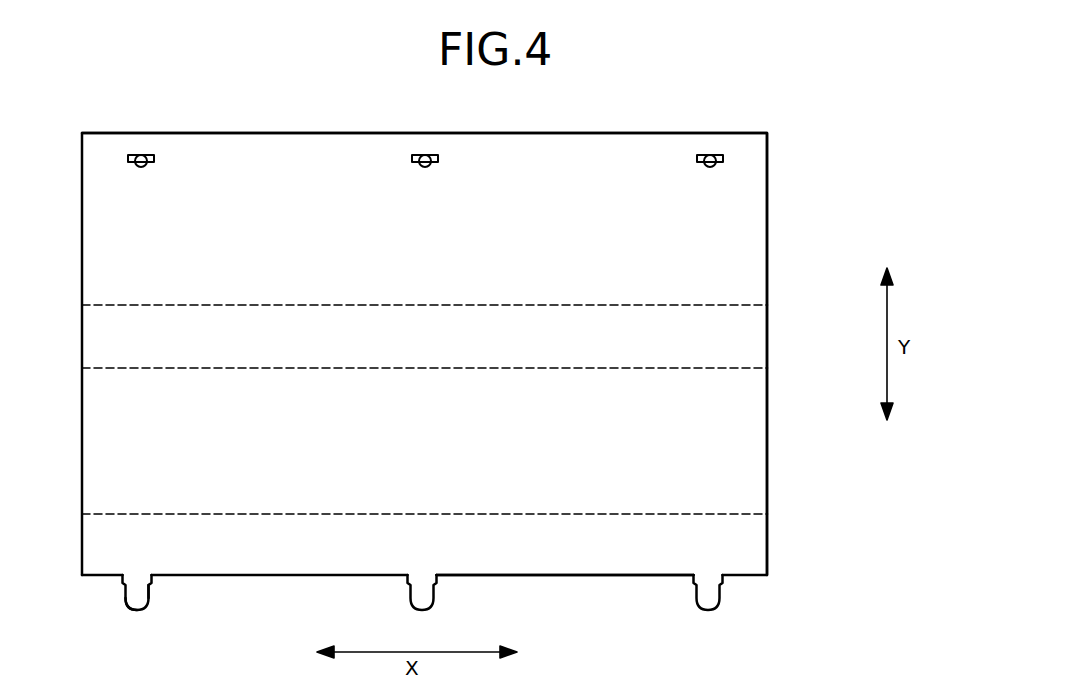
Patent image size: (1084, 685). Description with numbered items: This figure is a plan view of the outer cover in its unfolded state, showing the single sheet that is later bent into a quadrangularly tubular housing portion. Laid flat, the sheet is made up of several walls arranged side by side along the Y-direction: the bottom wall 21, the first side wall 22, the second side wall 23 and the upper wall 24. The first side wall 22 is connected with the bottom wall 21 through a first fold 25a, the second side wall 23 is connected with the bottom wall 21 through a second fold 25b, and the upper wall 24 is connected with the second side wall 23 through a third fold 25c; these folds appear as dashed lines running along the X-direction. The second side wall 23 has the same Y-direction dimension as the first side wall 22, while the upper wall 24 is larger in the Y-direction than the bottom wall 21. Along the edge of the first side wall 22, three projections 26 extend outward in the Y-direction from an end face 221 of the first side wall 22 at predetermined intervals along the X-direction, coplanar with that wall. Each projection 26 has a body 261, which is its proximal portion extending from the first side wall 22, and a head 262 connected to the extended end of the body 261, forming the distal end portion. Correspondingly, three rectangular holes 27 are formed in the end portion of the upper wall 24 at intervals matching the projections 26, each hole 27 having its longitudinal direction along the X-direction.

The bottom wall 21 is at (767, 440).
The first side wall 22 is at (755, 543).
The second side wall 23 is at (767, 333).
The upper wall 24 is at (767, 215).
The first fold 25a is at (732, 514).
The second fold 25b is at (732, 368).
The third fold 25c is at (732, 305).
The projection 26 is at (228, 580).
The body 261 is at (148, 578).
The head 262 is at (140, 603).
The hole 27 is at (140, 155).
The end face 221 is at (568, 576).